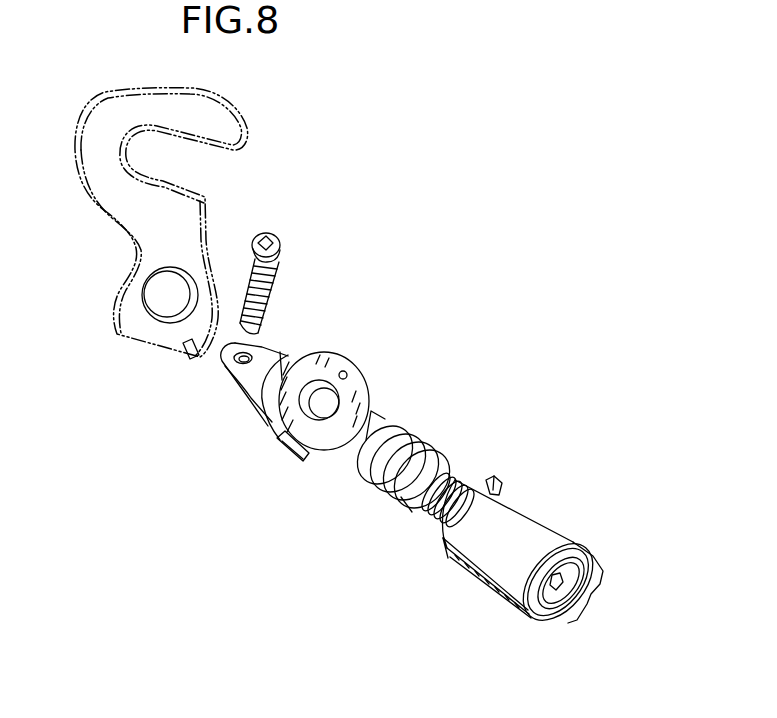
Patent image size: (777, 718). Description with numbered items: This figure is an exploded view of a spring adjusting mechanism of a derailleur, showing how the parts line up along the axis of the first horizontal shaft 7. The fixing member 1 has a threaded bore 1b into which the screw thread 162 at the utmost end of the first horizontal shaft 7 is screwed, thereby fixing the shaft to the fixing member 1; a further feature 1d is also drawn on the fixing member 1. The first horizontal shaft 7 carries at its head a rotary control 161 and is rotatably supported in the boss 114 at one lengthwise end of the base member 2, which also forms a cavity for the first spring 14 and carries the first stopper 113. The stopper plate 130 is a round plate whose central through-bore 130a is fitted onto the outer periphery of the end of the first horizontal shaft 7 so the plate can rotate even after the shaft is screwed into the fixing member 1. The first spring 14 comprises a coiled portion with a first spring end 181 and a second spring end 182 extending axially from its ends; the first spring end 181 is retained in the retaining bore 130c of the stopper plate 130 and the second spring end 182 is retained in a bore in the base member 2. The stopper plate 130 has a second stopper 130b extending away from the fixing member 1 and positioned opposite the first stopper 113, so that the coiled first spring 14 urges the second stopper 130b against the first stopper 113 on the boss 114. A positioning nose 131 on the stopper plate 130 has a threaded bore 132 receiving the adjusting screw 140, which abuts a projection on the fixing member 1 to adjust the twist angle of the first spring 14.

The fixing member 1 is at (97, 128).
The threaded bore 1b is at (173, 315).
The stop tab 1d is at (186, 349).
The adjusting screw 140 is at (281, 252).
The stopper plate 130 is at (327, 350).
The through-bore 130a is at (341, 393).
The second stopper 130b is at (303, 459).
The retaining bore 130c is at (348, 369).
The positioning nose 131 is at (276, 347).
The threaded bore 132 is at (240, 369).
The first spring 14 is at (427, 448).
The first spring end 181 is at (388, 418).
The second spring end 182 is at (411, 513).
The screw thread 162 is at (453, 482).
The base member 2 is at (574, 530).
The boss 114 is at (545, 526).
The first horizontal shaft 7 is at (568, 569).
The rotary control 161 is at (565, 588).
The first stopper 113 is at (496, 480).